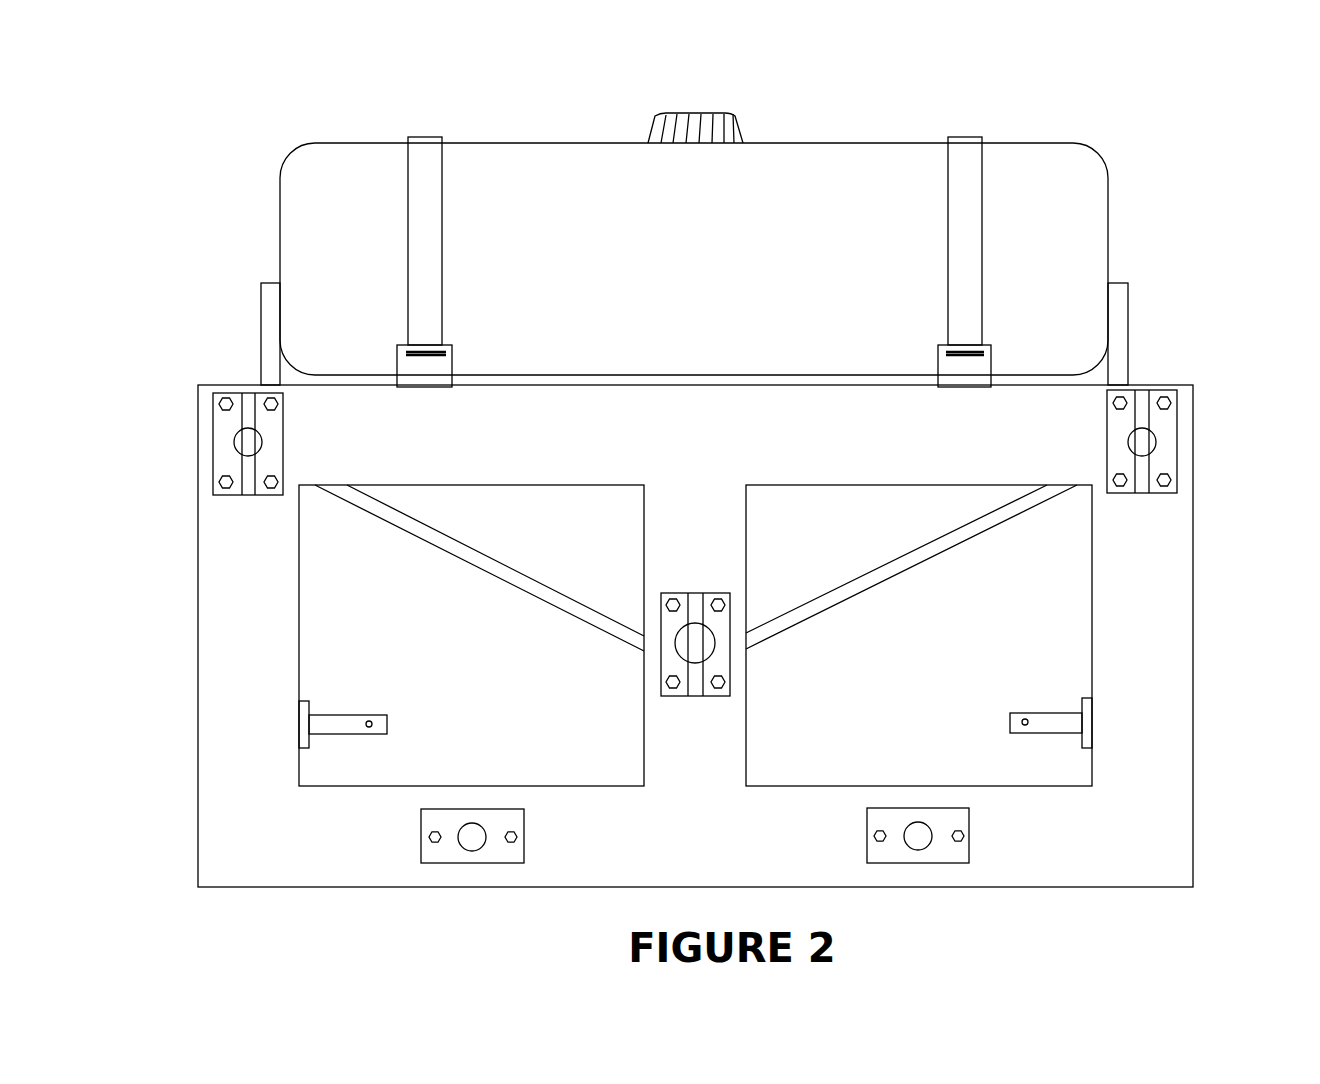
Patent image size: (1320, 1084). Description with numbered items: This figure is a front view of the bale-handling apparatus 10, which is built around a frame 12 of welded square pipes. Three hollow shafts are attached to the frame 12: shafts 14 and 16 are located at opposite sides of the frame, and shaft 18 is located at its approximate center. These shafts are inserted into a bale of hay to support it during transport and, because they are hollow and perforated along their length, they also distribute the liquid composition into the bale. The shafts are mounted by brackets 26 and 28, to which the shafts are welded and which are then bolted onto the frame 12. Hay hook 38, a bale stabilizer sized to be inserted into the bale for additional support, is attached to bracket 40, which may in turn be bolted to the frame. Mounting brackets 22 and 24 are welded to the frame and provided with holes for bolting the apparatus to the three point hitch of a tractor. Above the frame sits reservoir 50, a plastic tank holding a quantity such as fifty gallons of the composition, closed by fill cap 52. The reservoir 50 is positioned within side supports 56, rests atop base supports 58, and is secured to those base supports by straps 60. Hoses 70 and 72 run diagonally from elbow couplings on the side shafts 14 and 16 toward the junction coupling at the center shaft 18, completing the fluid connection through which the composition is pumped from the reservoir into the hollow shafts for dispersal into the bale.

The apparatus 10 is at (1220, 186).
The frame 12 is at (1167, 647).
The hollow shaft 14 is at (1147, 438).
The hollow shaft 16 is at (247, 443).
The hollow shaft 18 is at (700, 642).
The mounting bracket 22 is at (400, 718).
The mounting bracket 24 is at (996, 731).
The bracket 26 is at (272, 457).
The bracket 28 is at (717, 663).
The hay hook 38 is at (472, 836).
The bracket 40 is at (503, 822).
The reservoir 50 is at (1110, 145).
The fill cap 52 is at (756, 118).
The side support 56 is at (270, 316).
The base support 58 is at (442, 363).
The strap 60 is at (434, 240).
The hose 70 is at (873, 578).
The hose 72 is at (527, 585).